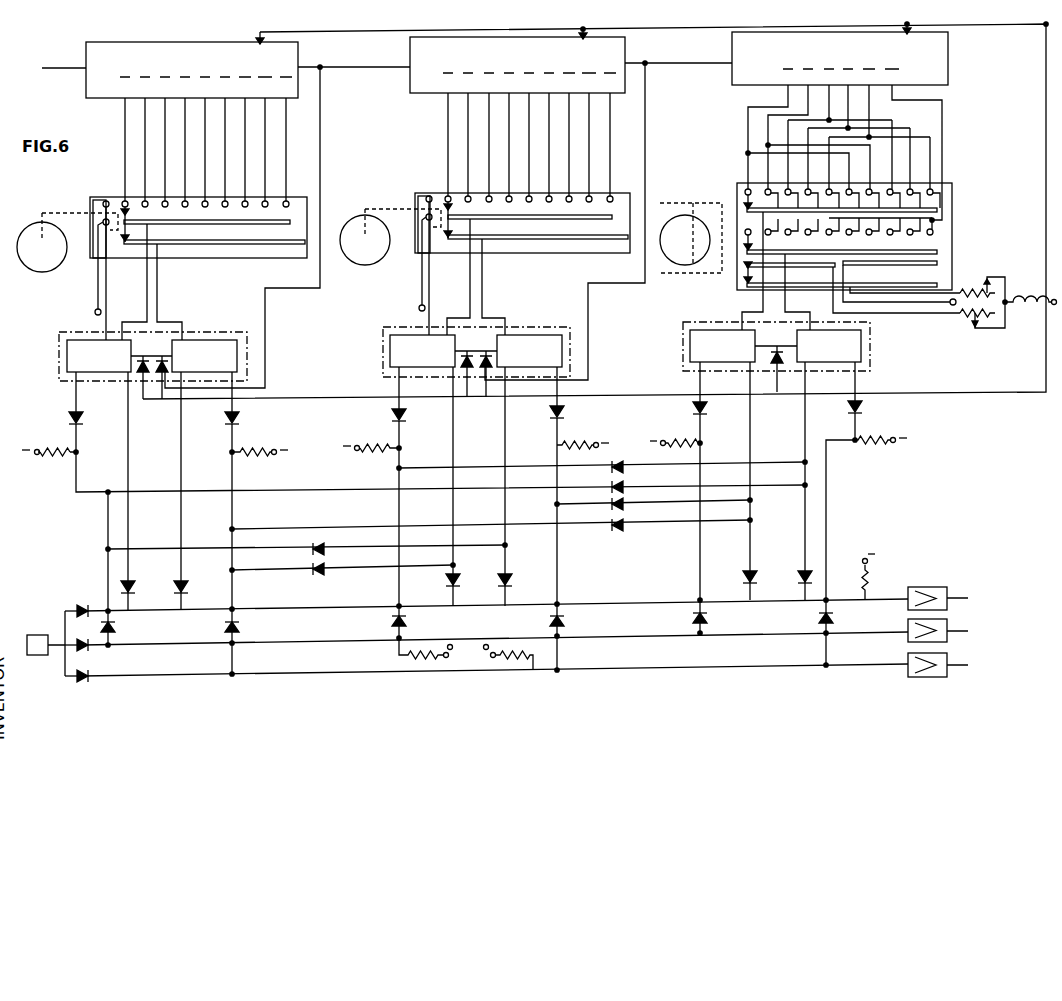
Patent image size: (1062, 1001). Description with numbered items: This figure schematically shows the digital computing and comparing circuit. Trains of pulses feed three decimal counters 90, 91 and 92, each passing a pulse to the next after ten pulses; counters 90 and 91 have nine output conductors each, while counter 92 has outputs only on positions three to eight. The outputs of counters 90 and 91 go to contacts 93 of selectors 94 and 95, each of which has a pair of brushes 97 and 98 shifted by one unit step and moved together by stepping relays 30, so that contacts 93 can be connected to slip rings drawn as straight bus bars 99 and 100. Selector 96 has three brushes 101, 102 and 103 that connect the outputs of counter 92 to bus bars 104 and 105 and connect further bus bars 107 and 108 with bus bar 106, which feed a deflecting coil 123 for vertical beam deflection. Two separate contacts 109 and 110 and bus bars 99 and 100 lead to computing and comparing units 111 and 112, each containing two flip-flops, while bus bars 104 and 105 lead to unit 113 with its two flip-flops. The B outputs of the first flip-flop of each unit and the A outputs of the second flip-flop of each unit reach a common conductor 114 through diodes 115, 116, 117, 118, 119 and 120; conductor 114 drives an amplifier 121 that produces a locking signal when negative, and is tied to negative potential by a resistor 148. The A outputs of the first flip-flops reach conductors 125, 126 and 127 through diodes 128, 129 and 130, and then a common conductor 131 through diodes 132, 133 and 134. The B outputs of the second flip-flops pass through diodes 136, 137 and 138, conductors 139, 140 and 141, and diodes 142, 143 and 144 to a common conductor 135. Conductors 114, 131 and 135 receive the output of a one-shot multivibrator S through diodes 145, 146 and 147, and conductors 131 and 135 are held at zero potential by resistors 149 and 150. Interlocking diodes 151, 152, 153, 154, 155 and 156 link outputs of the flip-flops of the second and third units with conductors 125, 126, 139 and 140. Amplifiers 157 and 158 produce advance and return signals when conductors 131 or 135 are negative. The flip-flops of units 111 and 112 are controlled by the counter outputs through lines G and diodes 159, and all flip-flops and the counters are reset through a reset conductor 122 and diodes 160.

The stepping relay 30 is at (38, 258).
The decimal counter 90 is at (199, 65).
The decimal counter 91 is at (529, 60).
The decimal counter 92 is at (854, 55).
The contacts 93 is at (287, 195).
The selector 94 is at (303, 215).
The selector 95 is at (630, 210).
The selector 96 is at (950, 228).
The brush 97 is at (93, 206).
The brush 98 is at (125, 243).
The slip ring 99 is at (205, 224).
The slip ring 100 is at (235, 244).
The brush 101 is at (740, 200).
The brush 102 is at (740, 248).
The brush 103 is at (740, 280).
The bus bar 104 is at (822, 214).
The bus bar 105 is at (827, 257).
The bus bar 106 is at (792, 287).
The bus bar 107 is at (938, 262).
The bus bar 108 is at (792, 265).
The separate contact 109 is at (106, 201).
The separate contact 110 is at (103, 225).
The computing and comparing unit 111 is at (62, 340).
The computing and comparing unit 112 is at (386, 336).
The computing and comparing unit 113 is at (686, 332).
The common conductor 114 is at (272, 612).
The diode 115 is at (120, 585).
The diode 116 is at (189, 585).
The diode 117 is at (445, 580).
The diode 118 is at (513, 578).
The diode 119 is at (742, 576).
The diode 120 is at (797, 577).
The amplifier 121 is at (930, 588).
The reset conductor 122 is at (1046, 30).
The deflecting coil 123 is at (1030, 310).
The conductor 125 is at (78, 478).
The conductor 126 is at (401, 447).
The conductor 127 is at (706, 434).
The diode 128 is at (68, 419).
The diode 129 is at (392, 416).
The diode 130 is at (692, 410).
The common conductor 131 is at (184, 645).
The diode 132 is at (118, 629).
The diode 133 is at (408, 623).
The diode 134 is at (708, 621).
The common conductor 135 is at (322, 677).
The diode 136 is at (240, 419).
The diode 137 is at (565, 413).
The diode 138 is at (863, 408).
The conductor 139 is at (234, 520).
The conductor 140 is at (559, 540).
The conductor 141 is at (828, 508).
The diode 142 is at (240, 629).
The diode 143 is at (565, 623).
The diode 144 is at (834, 621).
The diode 145 is at (77, 607).
The diode 146 is at (82, 650).
The diode 147 is at (84, 681).
The resistor 148 is at (869, 573).
The resistor 149 is at (420, 660).
The resistor 150 is at (512, 660).
The interlocking diode 151 is at (620, 464).
The interlocking diode 152 is at (622, 484).
The interlocking diode 153 is at (622, 502).
The interlocking diode 154 is at (622, 522).
The interlocking diode 155 is at (326, 551).
The interlocking diode 156 is at (326, 572).
The amplifier 157 is at (908, 638).
The amplifier 158 is at (908, 672).
The diode 159 is at (161, 375).
The diode 160 is at (140, 375).
The one-shot multivibrator S is at (36, 636).
The line G is at (264, 308).